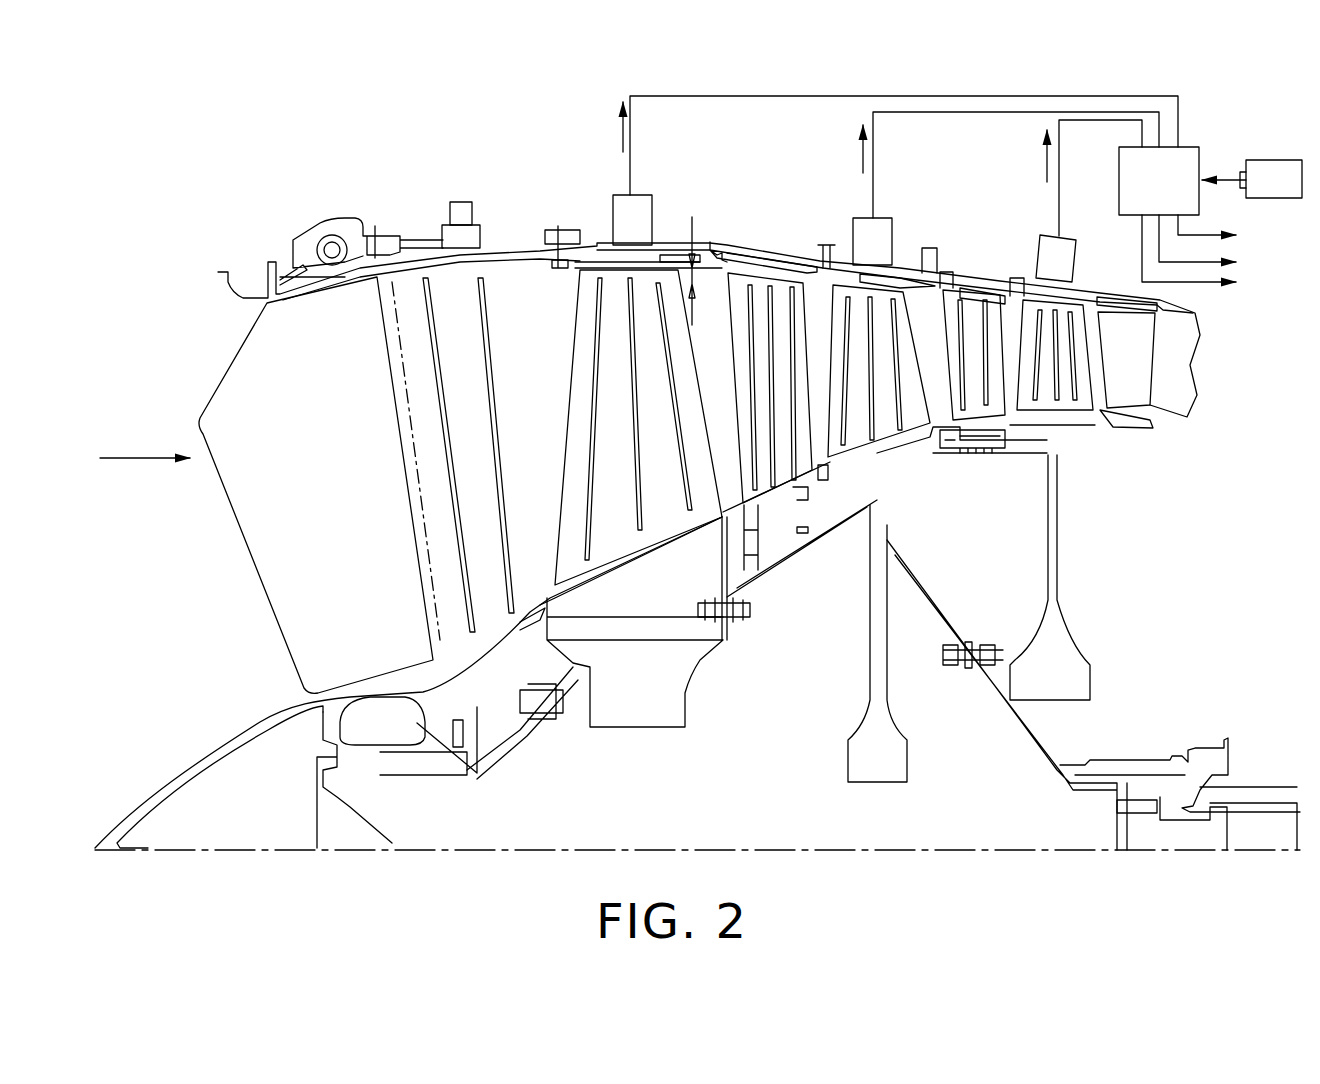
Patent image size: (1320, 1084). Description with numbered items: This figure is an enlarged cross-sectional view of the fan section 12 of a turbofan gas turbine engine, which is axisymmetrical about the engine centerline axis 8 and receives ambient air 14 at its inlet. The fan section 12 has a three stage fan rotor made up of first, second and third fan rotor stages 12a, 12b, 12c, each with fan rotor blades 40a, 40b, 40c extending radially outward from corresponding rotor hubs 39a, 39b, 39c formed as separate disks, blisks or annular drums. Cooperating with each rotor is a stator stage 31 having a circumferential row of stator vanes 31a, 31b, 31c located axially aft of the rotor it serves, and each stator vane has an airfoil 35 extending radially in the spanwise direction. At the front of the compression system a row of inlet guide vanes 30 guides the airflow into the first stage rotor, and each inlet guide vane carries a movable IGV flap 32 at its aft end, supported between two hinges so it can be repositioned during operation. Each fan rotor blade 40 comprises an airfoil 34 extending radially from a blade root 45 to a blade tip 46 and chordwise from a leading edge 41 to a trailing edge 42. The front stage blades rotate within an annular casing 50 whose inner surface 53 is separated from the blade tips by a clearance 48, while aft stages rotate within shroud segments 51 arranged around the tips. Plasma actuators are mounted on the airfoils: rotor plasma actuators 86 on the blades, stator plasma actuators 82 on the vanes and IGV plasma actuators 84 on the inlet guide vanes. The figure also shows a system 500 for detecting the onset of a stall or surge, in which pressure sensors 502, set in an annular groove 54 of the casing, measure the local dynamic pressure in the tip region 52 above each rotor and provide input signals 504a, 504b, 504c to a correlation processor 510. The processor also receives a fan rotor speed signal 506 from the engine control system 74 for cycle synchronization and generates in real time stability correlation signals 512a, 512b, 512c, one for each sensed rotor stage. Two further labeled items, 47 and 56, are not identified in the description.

The engine centerline axis 8 is at (260, 850).
The fan section 12 is at (337, 157).
The first fan rotor stage 12a is at (680, 738).
The second fan rotor stage 12b is at (852, 655).
The third fan rotor stage 12c is at (1098, 503).
The ambient air 14 is at (118, 460).
The inlet guide vanes 30 is at (316, 485).
The stator stage 31 is at (730, 383).
The stator vane 31a is at (760, 290).
The stator vane 31b is at (955, 290).
The stator vane 31c is at (1081, 368).
The IGV flap 32 is at (447, 280).
The airfoil 34 is at (575, 505).
The airfoil 35 is at (755, 340).
The rotor hub 39a is at (592, 600).
The rotor hub 39b is at (883, 440).
The rotor hub 39c is at (1060, 423).
The fan rotor blade 40 is at (918, 326).
The fan rotor blade 40a is at (663, 503).
The fan rotor blade 40b is at (888, 420).
The fan rotor blade 40c is at (1058, 407).
The leading edge 41 is at (560, 466).
The trailing edge 42 is at (773, 513).
The blade root 45 is at (575, 578).
The blade tip 46 is at (663, 270).
The airflow direction 47 is at (567, 373).
The clearance 48 is at (693, 230).
The annular casing 50 is at (705, 248).
The shroud segments 51 is at (1077, 297).
The tip region 52 is at (575, 268).
The inner surface 53 is at (522, 255).
The annular groove 54 is at (677, 262).
The aft sensor direction 56 is at (1078, 268).
The engine control system 74 is at (1252, 179).
The stator plasma actuators 82 is at (792, 442).
The IGV plasma actuators 84 is at (465, 557).
The rotor plasma actuators 86 is at (637, 527).
The system for detecting onset of aerodynamic instability 500 is at (548, 150).
The pressure sensor 502 is at (628, 198).
The input signal 504a is at (620, 140).
The input signal 504b is at (862, 158).
The input signal 504c is at (1045, 170).
The fan rotor speed signal 506 is at (1232, 178).
The correlation processor 510 is at (1159, 181).
The stability correlation signal 512a is at (1200, 237).
The stability correlation signal 512b is at (1200, 264).
The stability correlation signal 512c is at (1197, 284).